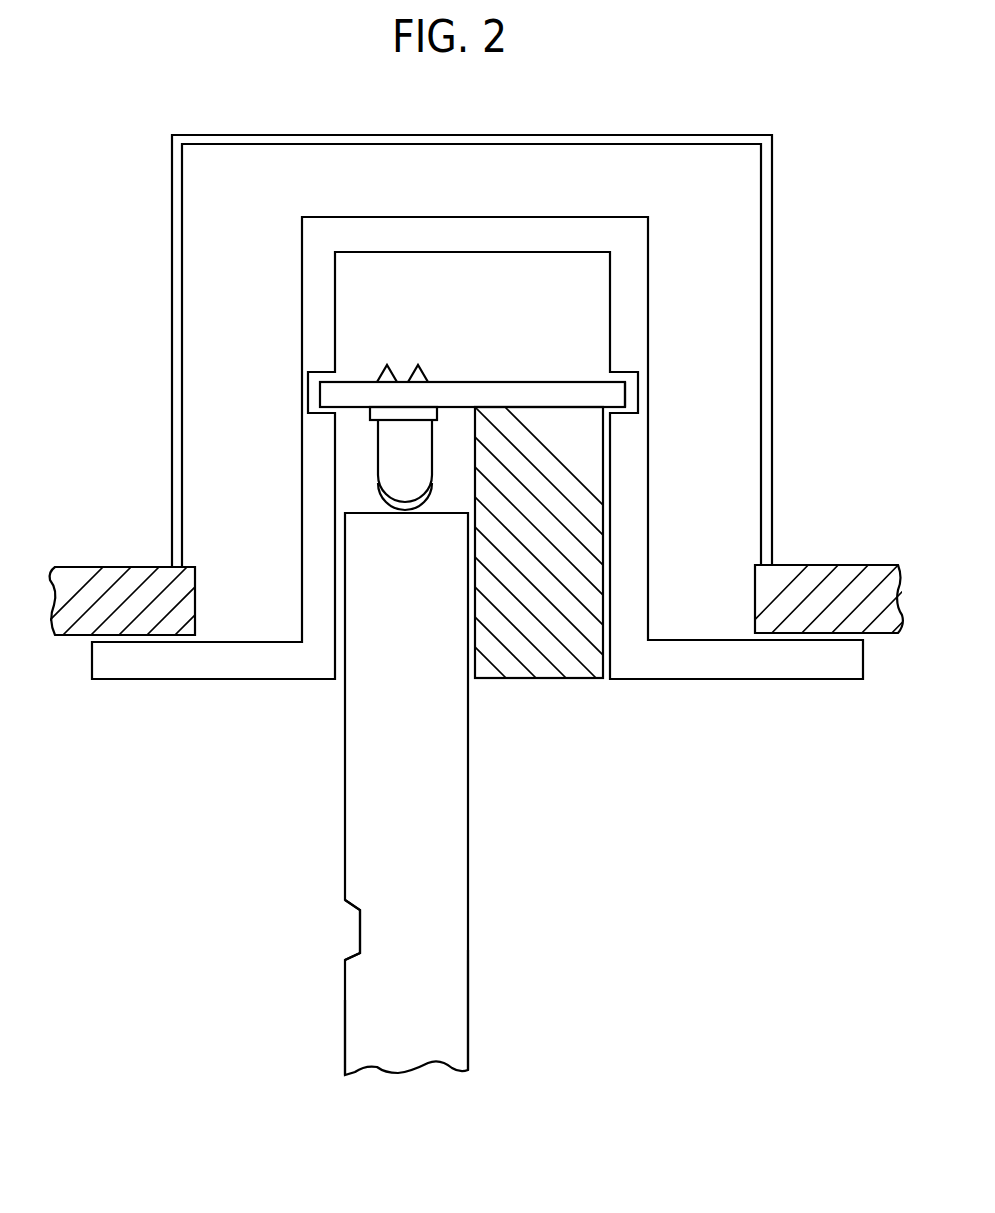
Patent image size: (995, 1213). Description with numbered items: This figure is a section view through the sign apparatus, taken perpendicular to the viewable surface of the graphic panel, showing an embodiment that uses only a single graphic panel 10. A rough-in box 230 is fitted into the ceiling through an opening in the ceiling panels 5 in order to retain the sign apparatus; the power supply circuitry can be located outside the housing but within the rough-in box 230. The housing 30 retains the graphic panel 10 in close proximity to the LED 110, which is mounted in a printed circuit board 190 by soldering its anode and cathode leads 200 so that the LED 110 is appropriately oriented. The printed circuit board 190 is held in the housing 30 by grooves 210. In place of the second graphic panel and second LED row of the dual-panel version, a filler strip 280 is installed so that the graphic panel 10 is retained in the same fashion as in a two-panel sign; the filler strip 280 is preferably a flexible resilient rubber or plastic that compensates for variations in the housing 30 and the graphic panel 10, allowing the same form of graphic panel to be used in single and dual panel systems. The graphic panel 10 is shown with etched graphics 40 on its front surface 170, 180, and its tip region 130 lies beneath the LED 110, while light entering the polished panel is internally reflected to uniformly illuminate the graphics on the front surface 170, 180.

The ceiling panels 5 is at (95, 567).
The graphic panel 10 is at (367, 860).
The housing 30 is at (636, 216).
The etched graphics 40 is at (360, 927).
The LED 110 is at (393, 457).
The sensor tip 130 is at (362, 508).
The front surface of the graphic panel 170 is at (347, 1034).
The front surface of the graphic panel 180 is at (468, 1003).
The printed circuit board 190 is at (583, 381).
The leads 200 is at (380, 375).
The grooves 210 is at (647, 382).
The rough-in box 230 is at (172, 300).
The filler strip 280 is at (537, 679).